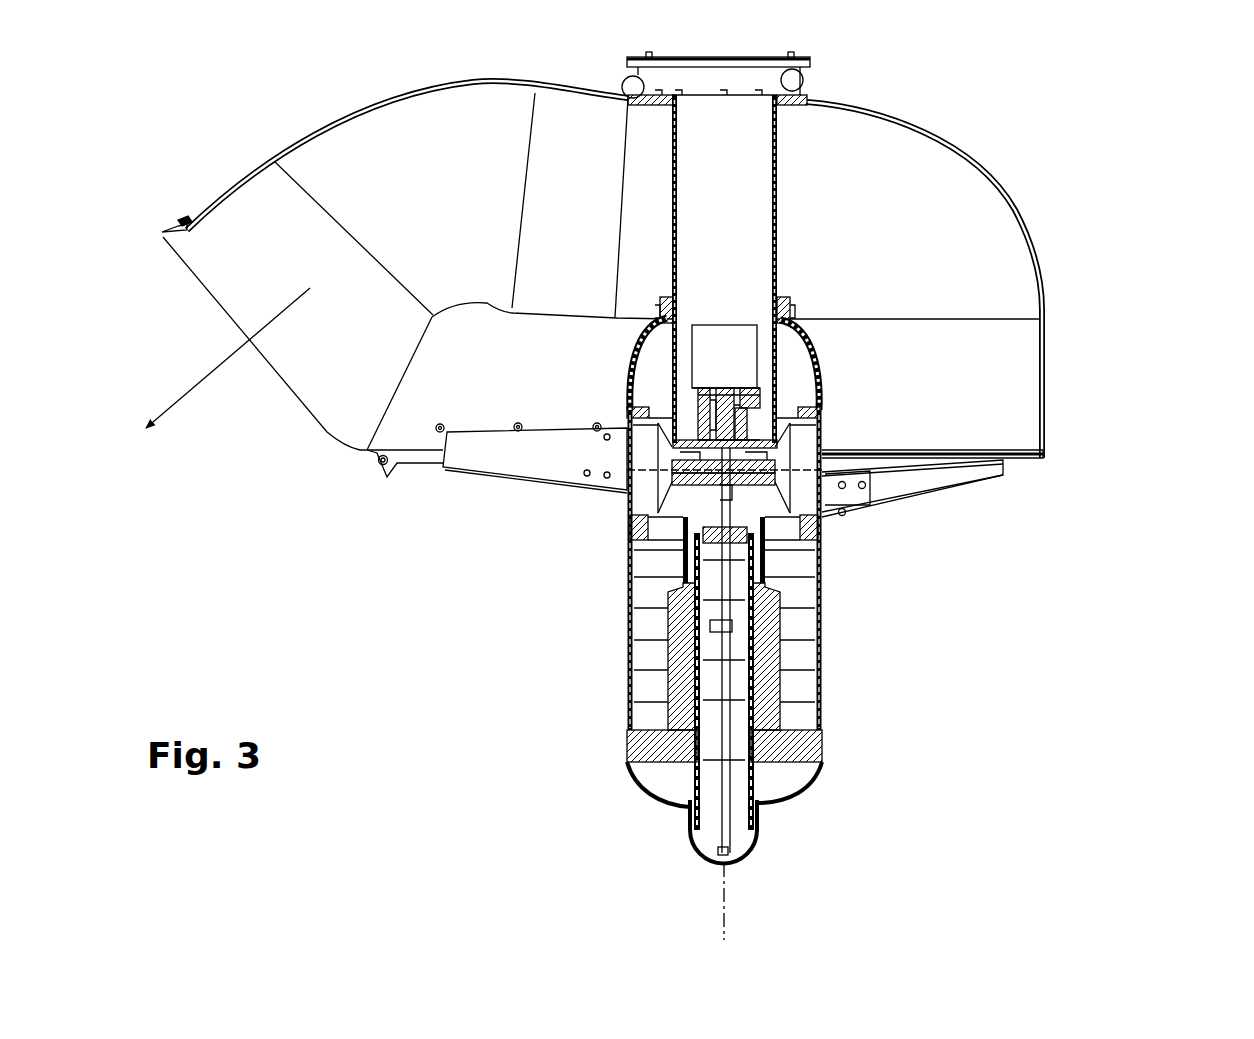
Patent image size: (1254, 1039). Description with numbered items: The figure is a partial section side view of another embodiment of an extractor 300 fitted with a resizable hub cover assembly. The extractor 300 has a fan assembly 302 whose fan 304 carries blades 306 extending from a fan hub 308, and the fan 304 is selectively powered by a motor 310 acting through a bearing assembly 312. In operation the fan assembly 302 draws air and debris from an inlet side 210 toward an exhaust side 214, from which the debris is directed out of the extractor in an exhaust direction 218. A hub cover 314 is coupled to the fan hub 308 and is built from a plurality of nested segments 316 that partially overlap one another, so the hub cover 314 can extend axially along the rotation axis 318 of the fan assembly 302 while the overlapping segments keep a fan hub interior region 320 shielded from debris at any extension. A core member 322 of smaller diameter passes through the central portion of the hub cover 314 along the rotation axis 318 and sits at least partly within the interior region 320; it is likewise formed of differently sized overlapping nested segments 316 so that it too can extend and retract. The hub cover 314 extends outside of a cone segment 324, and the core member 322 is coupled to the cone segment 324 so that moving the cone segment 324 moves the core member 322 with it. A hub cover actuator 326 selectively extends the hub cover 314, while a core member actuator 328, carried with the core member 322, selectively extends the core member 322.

The extractor 300 is at (1136, 110).
The exhaust side 214 is at (910, 230).
The exhaust direction 218 is at (185, 390).
The fan assembly 302 is at (645, 278).
The bearing assembly 312 is at (762, 397).
The motor 310 is at (723, 347).
The blades 306 is at (940, 482).
The fan hub 308 is at (675, 477).
The fan 304 is at (880, 548).
The nested segments 316 is at (822, 712).
The inlet side 210 is at (524, 645).
The hub cover actuator 326 is at (712, 597).
The core member actuator 328 is at (707, 647).
The fan hub interior region 320 is at (797, 705).
The hub cover 314 is at (612, 762).
The cone segment 324 is at (783, 800).
The core member 322 is at (690, 830).
The rotation axis 318 is at (725, 910).